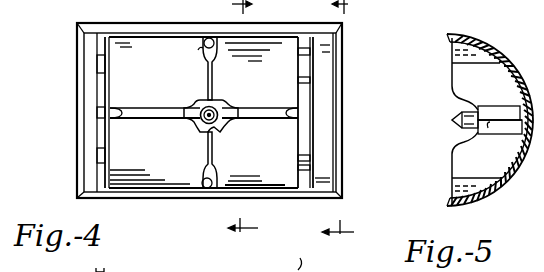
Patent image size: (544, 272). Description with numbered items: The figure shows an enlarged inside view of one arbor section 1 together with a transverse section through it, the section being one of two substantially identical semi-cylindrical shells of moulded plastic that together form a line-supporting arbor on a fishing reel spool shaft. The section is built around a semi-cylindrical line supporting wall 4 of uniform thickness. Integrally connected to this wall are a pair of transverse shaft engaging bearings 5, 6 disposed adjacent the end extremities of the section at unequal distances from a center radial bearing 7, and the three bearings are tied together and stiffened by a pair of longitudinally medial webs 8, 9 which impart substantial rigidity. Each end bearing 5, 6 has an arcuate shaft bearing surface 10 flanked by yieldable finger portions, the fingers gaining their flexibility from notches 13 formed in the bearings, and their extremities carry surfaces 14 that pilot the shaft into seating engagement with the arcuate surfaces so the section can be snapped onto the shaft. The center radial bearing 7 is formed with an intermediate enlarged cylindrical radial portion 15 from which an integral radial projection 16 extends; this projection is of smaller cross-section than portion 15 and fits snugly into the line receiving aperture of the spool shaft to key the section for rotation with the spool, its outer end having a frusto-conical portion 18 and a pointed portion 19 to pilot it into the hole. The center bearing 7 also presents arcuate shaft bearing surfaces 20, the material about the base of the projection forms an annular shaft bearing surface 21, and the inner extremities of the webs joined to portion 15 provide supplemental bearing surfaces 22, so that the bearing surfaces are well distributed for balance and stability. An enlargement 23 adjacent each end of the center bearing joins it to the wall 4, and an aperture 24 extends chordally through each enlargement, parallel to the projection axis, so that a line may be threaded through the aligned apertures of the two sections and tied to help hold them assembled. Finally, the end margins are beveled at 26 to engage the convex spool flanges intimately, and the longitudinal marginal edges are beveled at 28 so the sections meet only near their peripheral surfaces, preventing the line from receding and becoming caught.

In FIG. 4, the arbor section 1 is at (118, 22).
In FIG. 5, the arbor section 1 is at (476, 42).
In FIG. 4, the line supporting wall 4 is at (168, 24).
In FIG. 4, the end shaft engaging bearing 5 is at (97, 48).
In FIG. 4, the end shaft engaging bearing 6 is at (340, 178).
In FIG. 4, the center radial bearing 7 is at (207, 69).
In FIG. 5, the center radial bearing 7 is at (516, 166).
In FIG. 4, the longitudinally medial web 8 is at (130, 106).
In FIG. 4, the longitudinally medial web 9 is at (268, 109).
In FIG. 5, the longitudinally medial web 9 is at (492, 134).
In FIG. 4, the arcuate shaft bearing surface 10 is at (97, 128).
In FIG. 4, the notch 13 is at (107, 165).
In FIG. 4, the piloting surface 14 is at (200, 258).
In FIG. 4, the cylindrical radial portion 15 is at (218, 103).
In FIG. 5, the cylindrical radial portion 15 is at (506, 108).
In FIG. 4, the radial projection 16 is at (200, 128).
In FIG. 5, the radial projection 16 is at (464, 113).
In FIG. 5, the frusto-conical portion 18 is at (470, 132).
In FIG. 5, the pointed portion 19 is at (458, 121).
In FIG. 4, the arcuate shaft bearing surface 20 is at (218, 88).
In FIG. 5, the arcuate shaft bearing surface 20 is at (458, 94).
In FIG. 4, the annular shaft bearing surface 21 is at (200, 104).
In FIG. 4, the supplemental shaft bearing surface 22 is at (192, 119).
In FIG. 4, the enlargement 23 is at (200, 53).
In FIG. 5, the enlargement 23 is at (452, 60).
In FIG. 4, the aperture 24 is at (207, 37).
In FIG. 5, the aperture 24 is at (452, 46).
In FIG. 4, the end margin bevel 26 is at (84, 67).
In FIG. 4, the longitudinal edge bevel 28 is at (265, 30).
In FIG. 5, the longitudinal edge bevel 28 is at (446, 34).